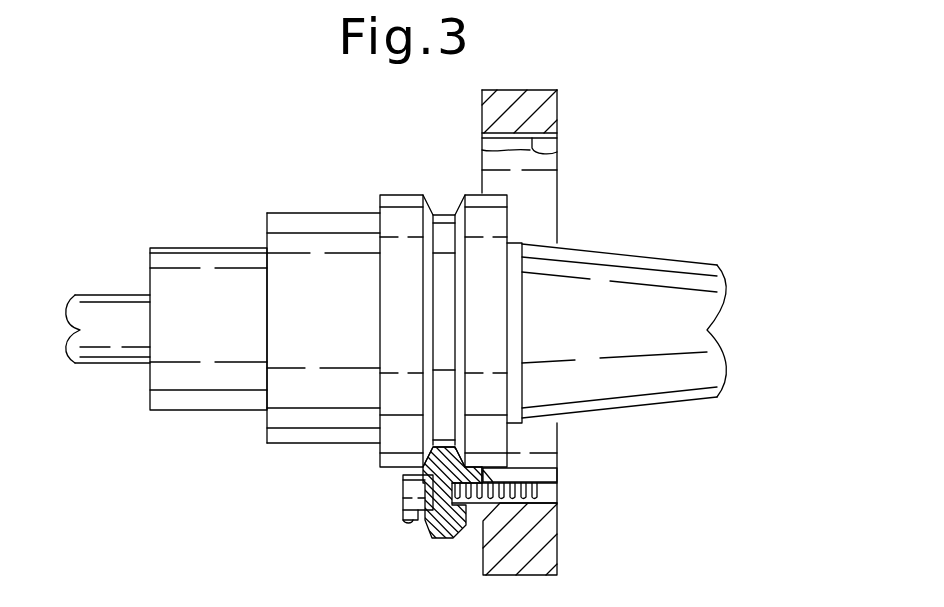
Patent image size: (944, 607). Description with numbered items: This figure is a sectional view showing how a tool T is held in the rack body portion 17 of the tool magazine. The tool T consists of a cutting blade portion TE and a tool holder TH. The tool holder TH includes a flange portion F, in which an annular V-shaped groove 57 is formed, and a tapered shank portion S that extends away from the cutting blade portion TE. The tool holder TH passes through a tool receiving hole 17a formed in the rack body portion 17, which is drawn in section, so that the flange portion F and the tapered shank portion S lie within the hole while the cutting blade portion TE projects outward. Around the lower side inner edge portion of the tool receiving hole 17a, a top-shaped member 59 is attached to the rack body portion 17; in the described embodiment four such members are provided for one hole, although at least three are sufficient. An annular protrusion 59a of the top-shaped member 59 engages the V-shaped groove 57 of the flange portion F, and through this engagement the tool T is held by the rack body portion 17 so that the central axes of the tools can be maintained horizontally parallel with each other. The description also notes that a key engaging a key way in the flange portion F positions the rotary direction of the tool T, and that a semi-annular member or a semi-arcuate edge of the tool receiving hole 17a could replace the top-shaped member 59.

The tool T is at (246, 207).
The cutting blade portion TE is at (113, 308).
The tool holder TH is at (327, 223).
The flange portion F is at (395, 192).
The annular V-shaped groove 57 is at (433, 213).
The top-shaped member 59 is at (415, 522).
The annular protrusion 59a is at (450, 542).
The rack body portion 17 is at (538, 542).
The tool receiving hole 17a is at (558, 143).
The tapered shank portion S is at (635, 255).